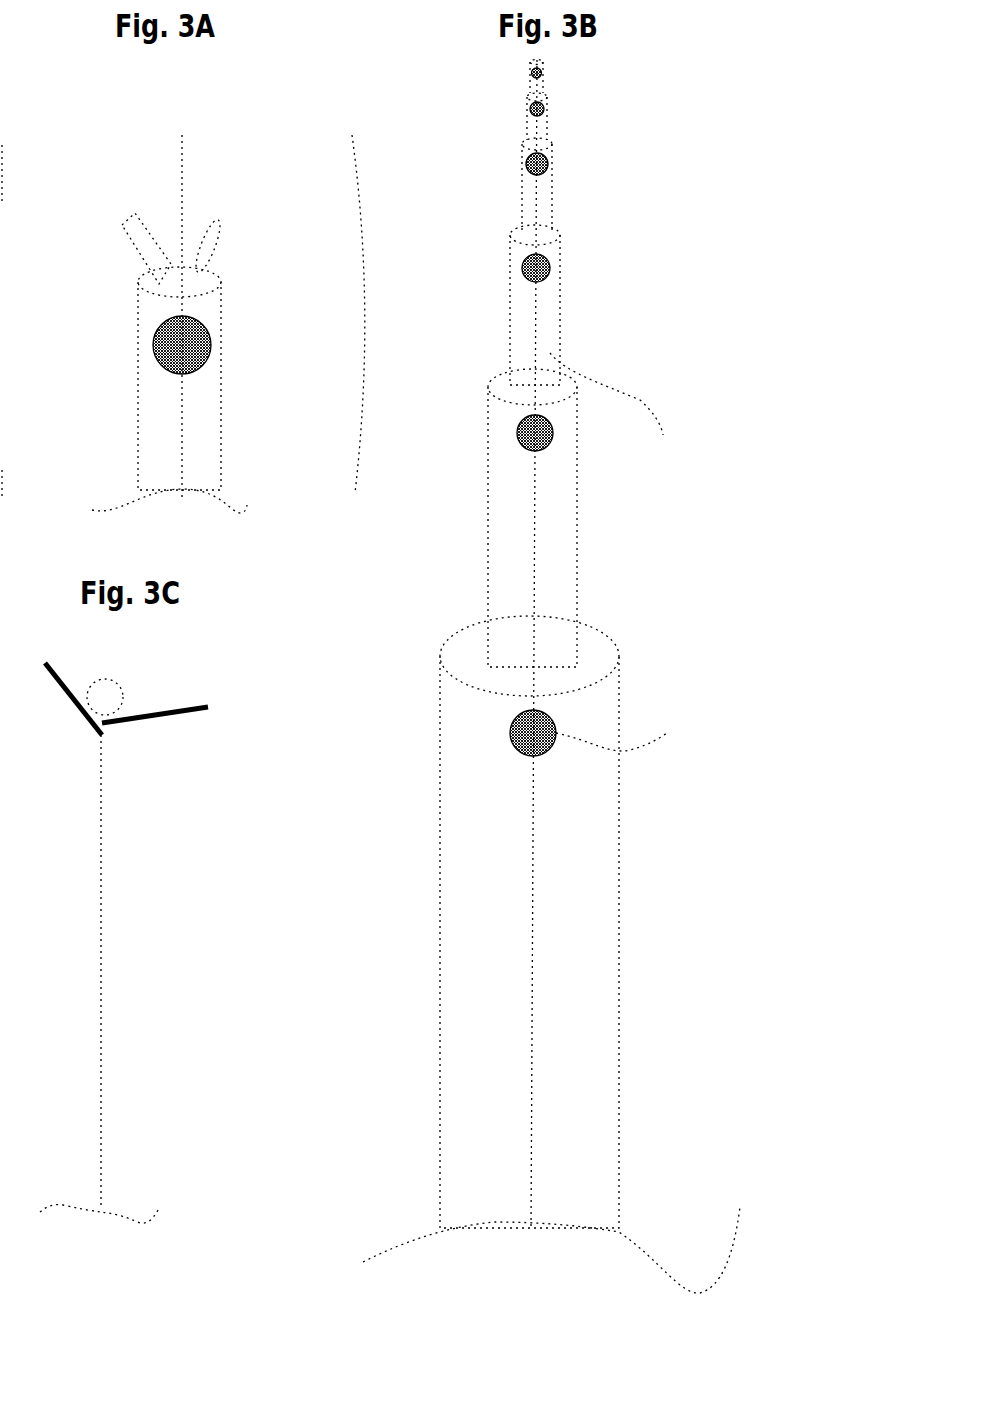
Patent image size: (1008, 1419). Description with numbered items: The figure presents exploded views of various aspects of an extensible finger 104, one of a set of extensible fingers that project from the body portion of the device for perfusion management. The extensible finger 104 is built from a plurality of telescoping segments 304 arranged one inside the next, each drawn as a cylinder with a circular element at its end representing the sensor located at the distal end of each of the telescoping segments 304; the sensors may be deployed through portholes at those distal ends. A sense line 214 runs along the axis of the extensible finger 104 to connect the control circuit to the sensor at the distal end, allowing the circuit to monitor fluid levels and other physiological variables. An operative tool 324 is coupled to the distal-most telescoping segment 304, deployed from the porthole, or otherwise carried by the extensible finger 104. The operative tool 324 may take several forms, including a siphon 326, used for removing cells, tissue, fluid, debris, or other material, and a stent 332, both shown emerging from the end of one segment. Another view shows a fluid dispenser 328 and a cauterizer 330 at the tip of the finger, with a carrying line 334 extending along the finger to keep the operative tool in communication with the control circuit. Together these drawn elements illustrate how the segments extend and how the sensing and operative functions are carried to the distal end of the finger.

In FIG. 3B, the extensible finger 104 is at (454, 1075).
In FIG. 3B, the sense line 214 is at (670, 993).
In FIG. 3B, the telescoping segment 304 is at (568, 470).
In FIG. 3A, the operative tool 324 is at (195, 152).
In FIG. 3A, the siphon 326 is at (132, 202).
In FIG. 3C, the fluid dispenser 328 is at (133, 678).
In FIG. 3C, the cauterizer 330 is at (200, 720).
In FIG. 3A, the stent 332 is at (227, 237).
In FIG. 3C, the carrying line 334 is at (101, 942).